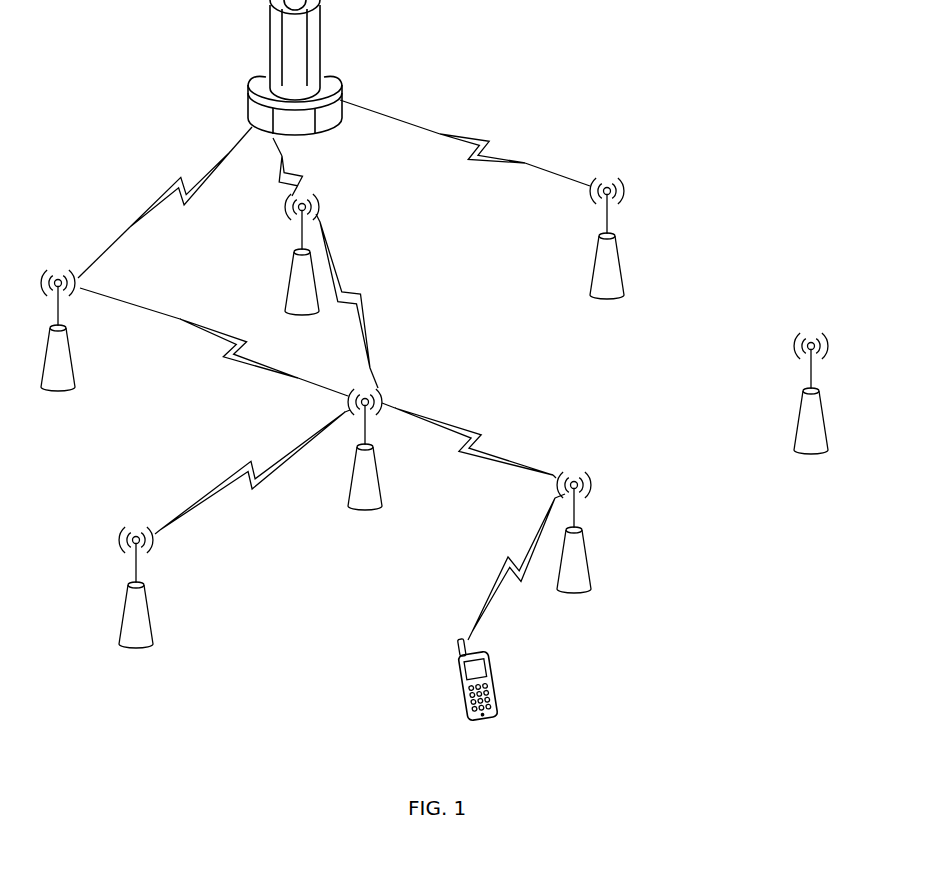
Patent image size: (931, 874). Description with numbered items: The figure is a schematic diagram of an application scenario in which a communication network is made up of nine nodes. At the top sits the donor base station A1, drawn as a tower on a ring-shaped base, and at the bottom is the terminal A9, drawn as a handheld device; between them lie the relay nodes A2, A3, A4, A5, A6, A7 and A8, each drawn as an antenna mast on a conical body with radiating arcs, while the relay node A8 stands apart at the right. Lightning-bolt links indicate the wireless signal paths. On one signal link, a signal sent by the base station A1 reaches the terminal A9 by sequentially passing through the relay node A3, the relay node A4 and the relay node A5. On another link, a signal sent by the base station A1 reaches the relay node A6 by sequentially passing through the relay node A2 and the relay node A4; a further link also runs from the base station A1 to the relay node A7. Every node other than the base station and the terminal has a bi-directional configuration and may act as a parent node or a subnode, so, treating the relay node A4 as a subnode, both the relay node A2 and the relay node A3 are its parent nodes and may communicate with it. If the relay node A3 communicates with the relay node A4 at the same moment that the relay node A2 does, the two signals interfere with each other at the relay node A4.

The donor base station A1 is at (298, 85).
The relay node A2 is at (61, 349).
The relay node A3 is at (303, 274).
The relay node A4 is at (366, 469).
The relay node A5 is at (576, 553).
The relay node A6 is at (136, 608).
The relay node A7 is at (610, 259).
The relay node A8 is at (809, 415).
The terminal A9 is at (477, 700).